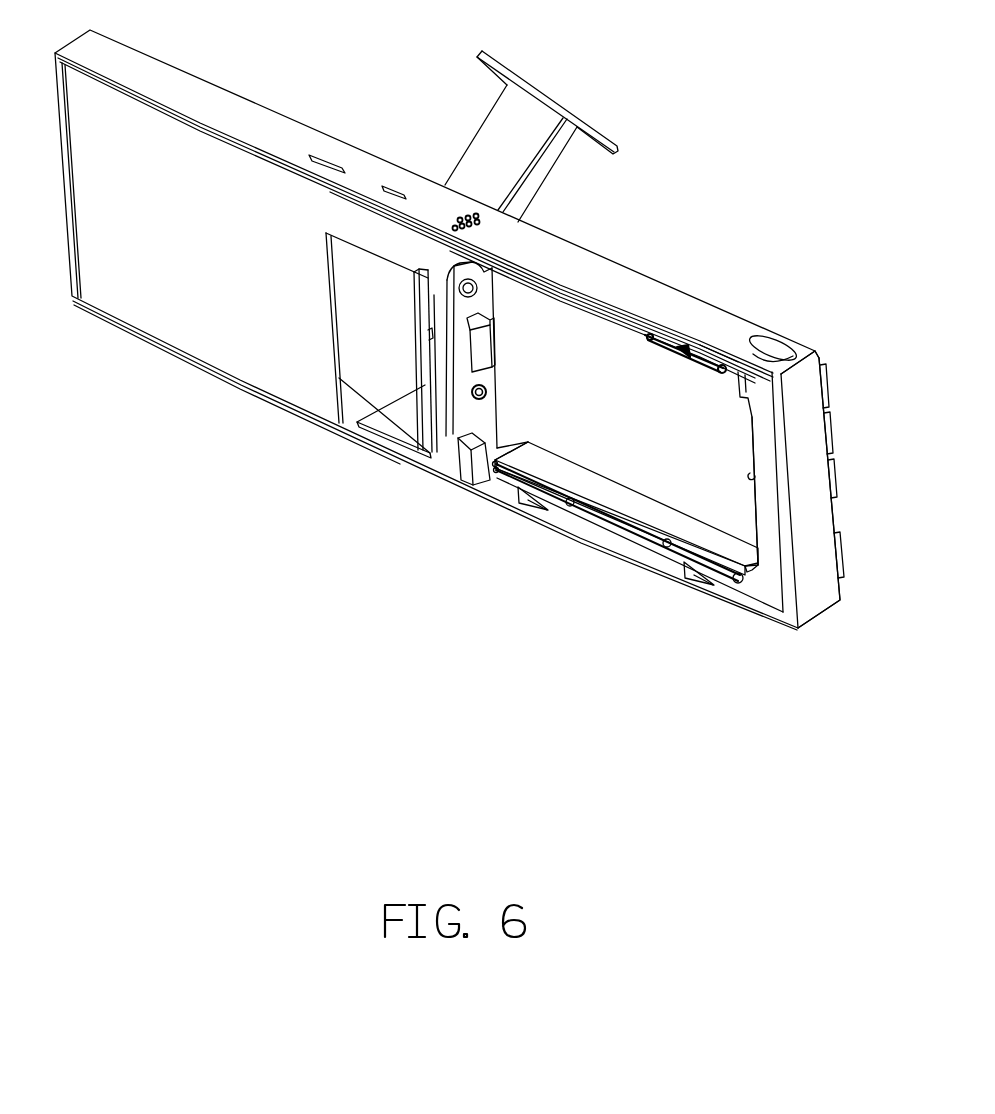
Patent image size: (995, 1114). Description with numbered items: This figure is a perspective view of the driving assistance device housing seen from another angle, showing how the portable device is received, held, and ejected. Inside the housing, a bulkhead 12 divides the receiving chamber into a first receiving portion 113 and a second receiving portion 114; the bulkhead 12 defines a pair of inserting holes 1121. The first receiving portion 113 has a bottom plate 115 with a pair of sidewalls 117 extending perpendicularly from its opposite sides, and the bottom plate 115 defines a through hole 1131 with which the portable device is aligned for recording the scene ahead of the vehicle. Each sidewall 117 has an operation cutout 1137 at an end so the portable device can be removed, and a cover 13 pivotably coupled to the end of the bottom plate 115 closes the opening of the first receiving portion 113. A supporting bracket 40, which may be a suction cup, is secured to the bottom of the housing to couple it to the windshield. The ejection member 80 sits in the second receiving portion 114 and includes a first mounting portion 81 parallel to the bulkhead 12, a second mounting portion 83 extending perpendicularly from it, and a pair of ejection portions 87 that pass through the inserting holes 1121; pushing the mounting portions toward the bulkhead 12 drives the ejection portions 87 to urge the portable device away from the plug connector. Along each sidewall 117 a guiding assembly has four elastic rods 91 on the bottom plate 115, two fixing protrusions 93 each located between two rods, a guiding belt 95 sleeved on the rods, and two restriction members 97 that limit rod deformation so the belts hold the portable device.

The bulkhead 12 is at (478, 303).
The cover 13 is at (808, 417).
The supporting bracket 40 is at (535, 78).
The ejection member 80 is at (416, 286).
The first mounting portion 81 is at (432, 388).
The second mounting portion 83 is at (392, 427).
The ejection portion 87 is at (447, 473).
The elastic rod 91 is at (568, 503).
The fixing protrusion 93 is at (530, 490).
The guiding belt 95 is at (637, 510).
The restriction member 97 is at (680, 560).
The first receiving portion 113 is at (814, 284).
The second receiving portion 114 is at (353, 273).
The bottom plate 115 is at (613, 360).
The sidewall 117 is at (713, 327).
The inserting hole 1121 is at (472, 277).
The through hole 1131 is at (753, 478).
The operation cutout 1137 is at (775, 353).